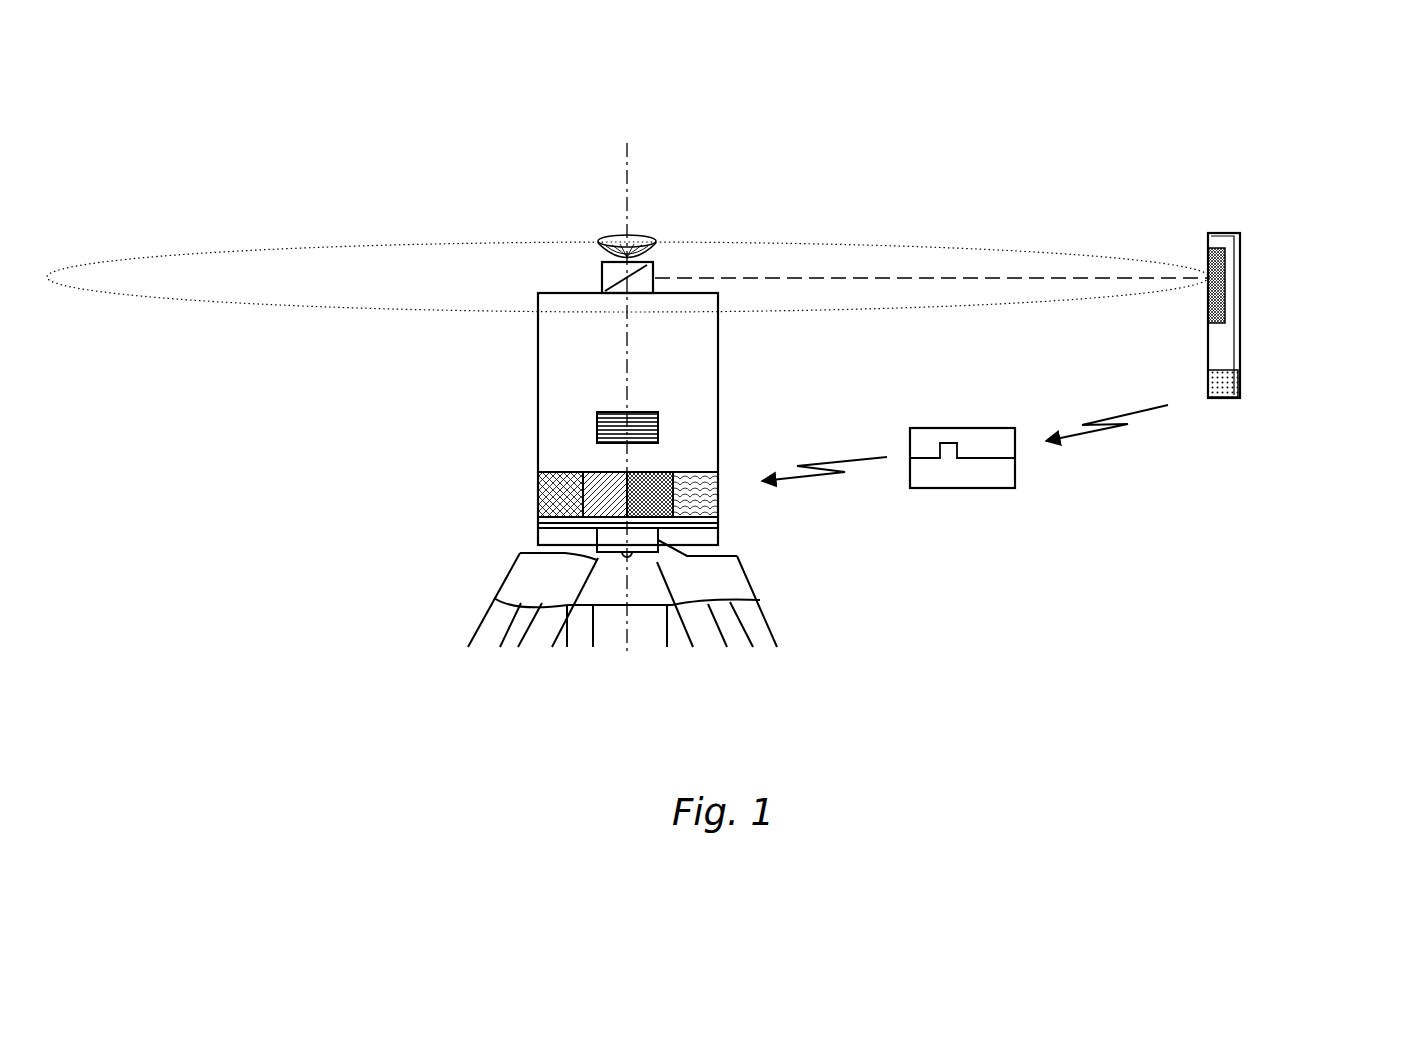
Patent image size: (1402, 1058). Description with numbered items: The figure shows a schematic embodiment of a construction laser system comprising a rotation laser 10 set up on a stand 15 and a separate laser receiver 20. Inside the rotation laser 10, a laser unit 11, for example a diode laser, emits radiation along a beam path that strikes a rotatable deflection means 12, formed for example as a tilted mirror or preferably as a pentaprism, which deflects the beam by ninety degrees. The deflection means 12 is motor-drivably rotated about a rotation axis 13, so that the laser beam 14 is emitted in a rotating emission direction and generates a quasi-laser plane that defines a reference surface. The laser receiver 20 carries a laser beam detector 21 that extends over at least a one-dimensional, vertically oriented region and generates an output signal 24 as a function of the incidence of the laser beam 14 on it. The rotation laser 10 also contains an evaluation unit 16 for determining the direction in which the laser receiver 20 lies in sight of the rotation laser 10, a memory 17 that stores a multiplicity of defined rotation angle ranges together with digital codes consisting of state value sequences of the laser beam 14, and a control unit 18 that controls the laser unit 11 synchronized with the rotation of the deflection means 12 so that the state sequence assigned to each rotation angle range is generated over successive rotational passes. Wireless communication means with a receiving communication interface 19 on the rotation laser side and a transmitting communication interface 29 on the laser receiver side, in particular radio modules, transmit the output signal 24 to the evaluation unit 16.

The rotation laser 10 is at (490, 381).
The laser unit 11 is at (648, 422).
The deflection means 12 is at (605, 290).
The rotation axis 13 is at (627, 208).
The laser beam 14 is at (812, 278).
The stand 15 is at (476, 597).
The evaluation unit 16 is at (556, 496).
The memory 17 is at (605, 503).
The control unit 18 is at (643, 490).
The communication interface 19 is at (708, 497).
The laser receiver 20 is at (1266, 292).
The laser beam detector 21 is at (1221, 318).
The output signal 24 is at (974, 500).
The communication interface 29 is at (1218, 385).